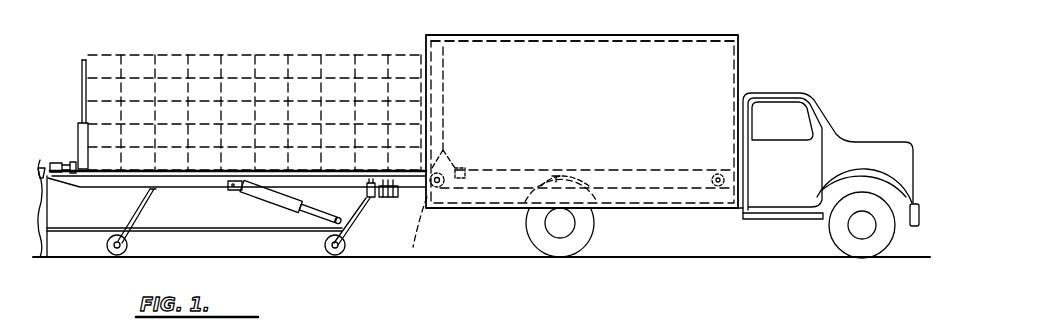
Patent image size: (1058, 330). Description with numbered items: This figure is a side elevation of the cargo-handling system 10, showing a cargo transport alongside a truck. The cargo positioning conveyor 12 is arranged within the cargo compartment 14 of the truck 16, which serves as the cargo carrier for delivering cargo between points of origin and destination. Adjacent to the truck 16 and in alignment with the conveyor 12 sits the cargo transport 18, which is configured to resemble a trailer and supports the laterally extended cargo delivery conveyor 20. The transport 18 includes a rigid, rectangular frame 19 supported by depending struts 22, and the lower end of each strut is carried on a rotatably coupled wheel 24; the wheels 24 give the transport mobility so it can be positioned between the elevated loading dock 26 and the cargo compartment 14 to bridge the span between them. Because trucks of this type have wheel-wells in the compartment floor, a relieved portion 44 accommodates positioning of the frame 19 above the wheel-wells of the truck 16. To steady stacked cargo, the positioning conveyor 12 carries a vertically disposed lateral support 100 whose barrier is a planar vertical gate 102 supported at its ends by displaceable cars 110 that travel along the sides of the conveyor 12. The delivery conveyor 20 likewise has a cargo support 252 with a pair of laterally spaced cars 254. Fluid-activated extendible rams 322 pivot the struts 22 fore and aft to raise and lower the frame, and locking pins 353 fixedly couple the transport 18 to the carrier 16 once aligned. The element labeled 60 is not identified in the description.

The cargo-handling system 10 is at (430, 213).
The cargo positioning conveyor 12 is at (638, 168).
The cargo compartment 14 is at (648, 48).
The truck 16 is at (836, 151).
The cargo transport 18 is at (380, 222).
The frame 19 is at (180, 187).
The cargo delivery conveyor 20 is at (245, 166).
The struts 22 is at (132, 212).
The wheel 24 is at (109, 253).
The dock 26 is at (44, 165).
The relieved portion 44 is at (545, 170).
The fender 60 is at (610, 168).
The lateral support 100 is at (448, 97).
The vertical gate 102 is at (446, 116).
The cars 110 is at (460, 167).
The cargo support 252 is at (82, 74).
The cars 254 is at (80, 124).
The rams 322 is at (272, 218).
The locking pins 353 is at (418, 226).